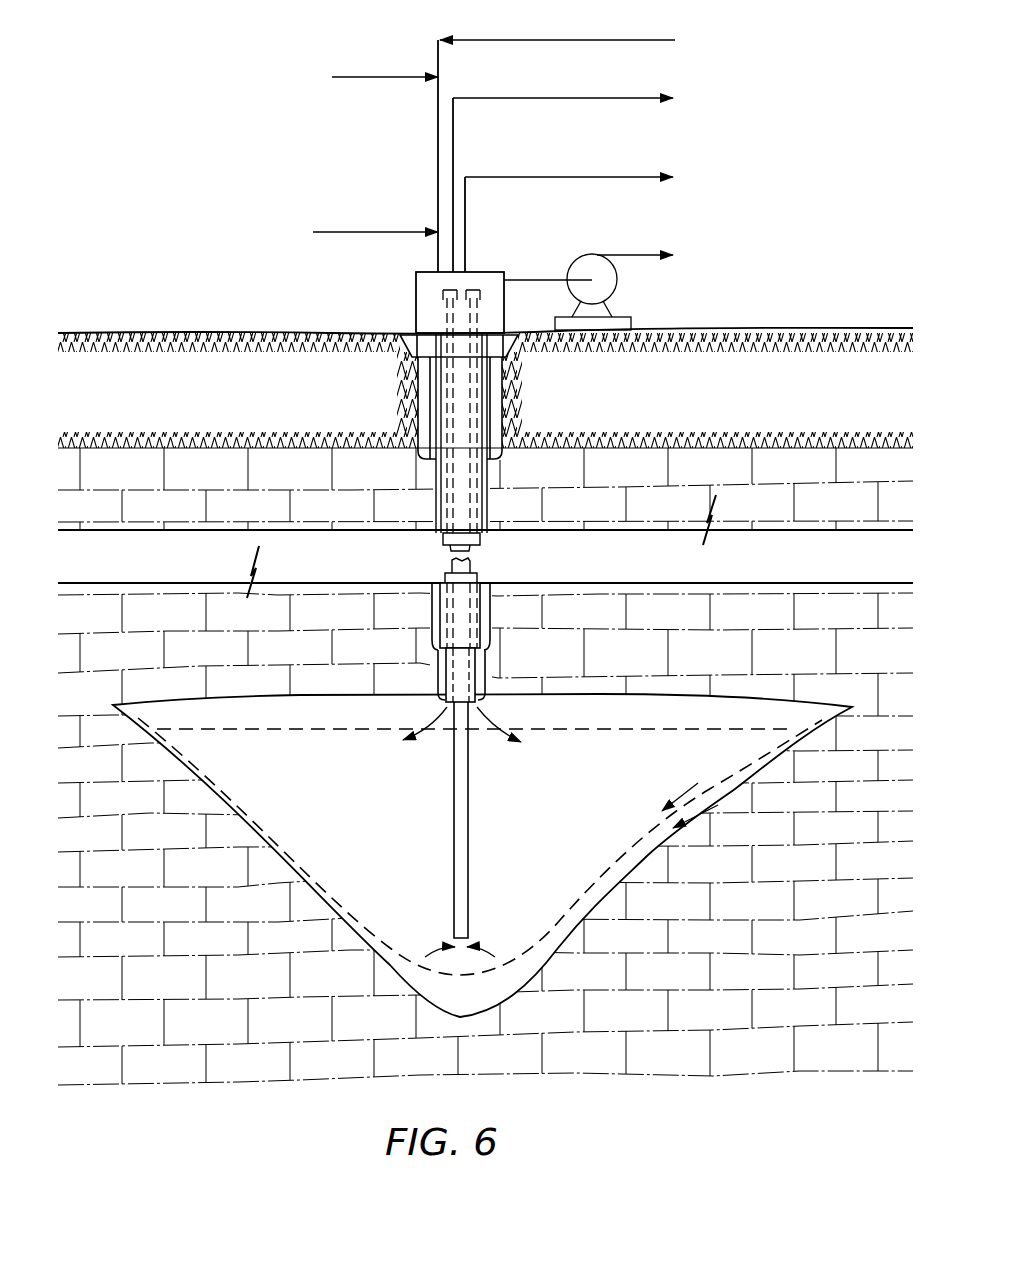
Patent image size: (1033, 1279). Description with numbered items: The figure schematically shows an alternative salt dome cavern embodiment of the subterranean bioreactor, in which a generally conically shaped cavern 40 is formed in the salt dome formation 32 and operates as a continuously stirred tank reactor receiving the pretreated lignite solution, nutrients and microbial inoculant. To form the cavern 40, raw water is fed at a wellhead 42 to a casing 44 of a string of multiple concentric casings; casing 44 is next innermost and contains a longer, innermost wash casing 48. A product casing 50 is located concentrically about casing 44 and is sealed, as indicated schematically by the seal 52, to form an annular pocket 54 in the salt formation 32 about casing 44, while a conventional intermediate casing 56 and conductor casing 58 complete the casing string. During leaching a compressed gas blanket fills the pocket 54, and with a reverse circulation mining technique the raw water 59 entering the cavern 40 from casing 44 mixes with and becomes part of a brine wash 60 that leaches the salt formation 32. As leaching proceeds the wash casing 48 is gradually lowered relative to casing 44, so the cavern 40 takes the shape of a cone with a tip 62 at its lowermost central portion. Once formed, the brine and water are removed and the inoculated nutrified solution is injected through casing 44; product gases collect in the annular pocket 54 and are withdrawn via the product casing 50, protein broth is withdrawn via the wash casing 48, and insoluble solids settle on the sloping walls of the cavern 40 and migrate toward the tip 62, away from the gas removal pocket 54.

The salt dome formation 32 is at (90, 775).
The cavern 40 is at (489, 548).
The wellhead 42 is at (406, 291).
The casing 44 is at (477, 680).
The wash casing 48 is at (463, 868).
The product casing 50 is at (482, 622).
The seal 52 is at (432, 640).
The annular pocket 54 is at (438, 687).
The intermediate casing 56 is at (490, 383).
The conductor casing 58 is at (400, 334).
The raw water 59 is at (555, 790).
The brine wash 60 is at (555, 869).
The tip 62 is at (465, 1020).